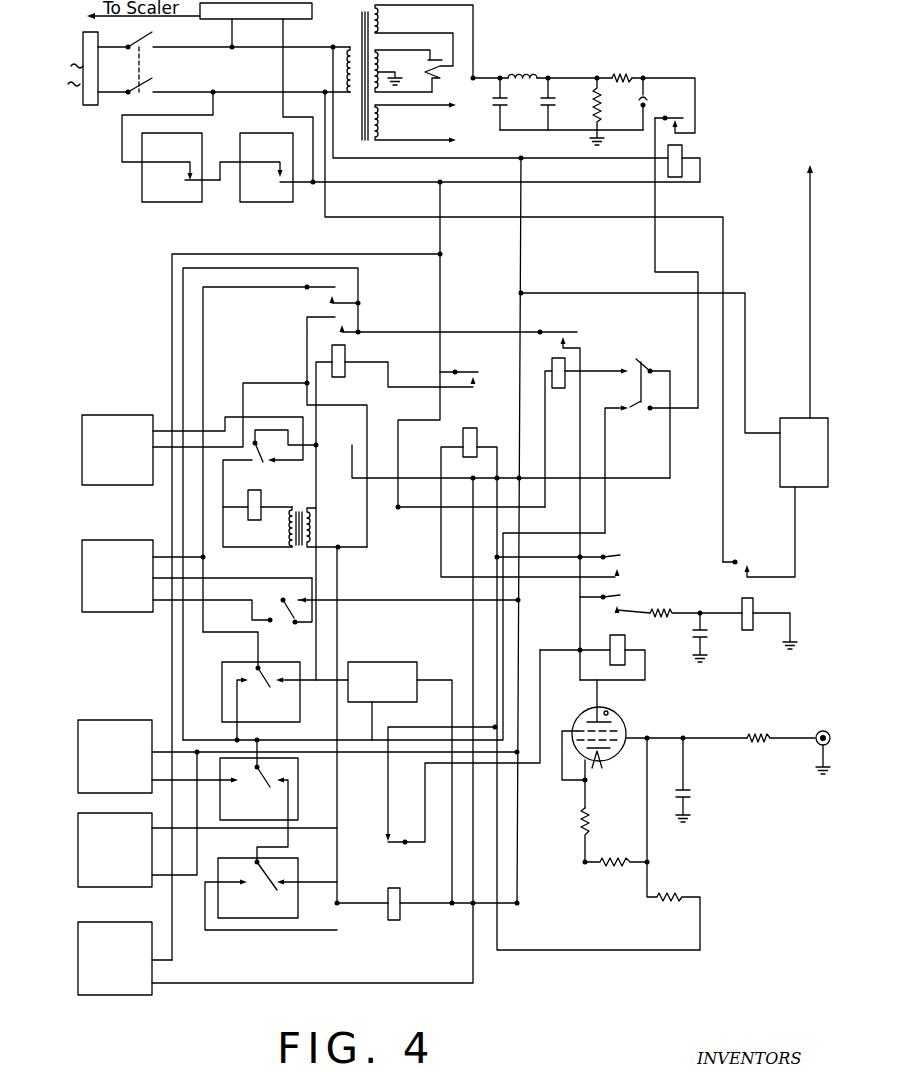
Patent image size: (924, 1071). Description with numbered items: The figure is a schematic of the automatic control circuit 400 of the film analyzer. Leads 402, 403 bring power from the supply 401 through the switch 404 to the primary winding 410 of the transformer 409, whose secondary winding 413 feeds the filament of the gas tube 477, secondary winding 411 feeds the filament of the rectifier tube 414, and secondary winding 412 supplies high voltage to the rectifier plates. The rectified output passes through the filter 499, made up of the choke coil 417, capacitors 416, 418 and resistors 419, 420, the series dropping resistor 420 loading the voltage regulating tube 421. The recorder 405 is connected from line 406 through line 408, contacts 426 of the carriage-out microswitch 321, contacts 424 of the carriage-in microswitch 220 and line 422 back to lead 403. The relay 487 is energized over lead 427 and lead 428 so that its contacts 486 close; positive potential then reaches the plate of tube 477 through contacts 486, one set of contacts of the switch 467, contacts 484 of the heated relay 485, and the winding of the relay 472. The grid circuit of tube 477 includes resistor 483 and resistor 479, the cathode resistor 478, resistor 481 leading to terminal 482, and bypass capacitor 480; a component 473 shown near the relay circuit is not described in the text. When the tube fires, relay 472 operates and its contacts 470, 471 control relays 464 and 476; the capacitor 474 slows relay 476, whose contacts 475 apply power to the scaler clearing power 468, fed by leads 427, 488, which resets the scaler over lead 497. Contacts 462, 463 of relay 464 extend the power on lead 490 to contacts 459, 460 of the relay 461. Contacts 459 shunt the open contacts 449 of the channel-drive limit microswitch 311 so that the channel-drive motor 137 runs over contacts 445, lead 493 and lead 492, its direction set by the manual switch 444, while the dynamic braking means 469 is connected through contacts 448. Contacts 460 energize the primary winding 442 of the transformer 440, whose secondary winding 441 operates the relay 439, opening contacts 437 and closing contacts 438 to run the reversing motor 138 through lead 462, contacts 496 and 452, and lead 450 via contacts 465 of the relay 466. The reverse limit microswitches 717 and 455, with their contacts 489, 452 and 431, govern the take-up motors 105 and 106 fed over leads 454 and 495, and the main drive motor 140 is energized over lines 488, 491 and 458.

The automatic control circuit 400 is at (706, 60).
The source of power supply 401 is at (91, 103).
The lead 402 is at (106, 46).
The lead 403 is at (110, 94).
The switch 404 is at (143, 85).
The recorder 405 is at (243, 19).
The line 406 is at (230, 34).
The line 408 is at (283, 62).
The transformer 409 is at (356, 22).
The primary winding 410 is at (347, 63).
The secondary winding 411 is at (380, 14).
The secondary winding 412 is at (380, 58).
The secondary winding 413 is at (380, 125).
The rectifier tube 414 is at (446, 56).
The capacitor 416 is at (517, 105).
The choke coil 417 is at (530, 76).
The capacitor 418 is at (564, 105).
The resistor 419 is at (612, 111).
The series dropping resistor 420 is at (620, 77).
The voltage regulating tube 421 is at (655, 103).
The line 422 is at (127, 119).
The contacts 424 is at (182, 181).
The contacts 426 is at (280, 178).
The lead 427 is at (423, 160).
The line 428 is at (418, 184).
The contacts 431 is at (248, 790).
The contacts 437 is at (264, 463).
The contacts 438 is at (252, 466).
The relay 439 is at (261, 498).
The transformer 440 is at (300, 553).
The secondary winding 441 is at (277, 527).
The primary winding 442 is at (311, 530).
The switch 444 is at (305, 597).
The contacts 445 is at (300, 624).
The contacts 448 is at (272, 677).
The contacts 449 is at (257, 667).
The lead 450 is at (180, 673).
The contacts 452 is at (268, 772).
The line 454 is at (163, 878).
The reverse limit microswitch 455 is at (298, 802).
The line 458 is at (283, 256).
The contacts 459 is at (348, 293).
The contacts 460 is at (350, 325).
The relay 461 is at (346, 356).
The lead 462 is at (291, 382).
The contacts 463 is at (490, 393).
The relay 464 is at (463, 440).
The contacts 465 is at (571, 341).
The relay 466 is at (567, 380).
The switch 467 is at (636, 360).
The scaler clearing power 468 is at (793, 480).
The dynamic braking means 469 is at (372, 668).
The contacts 470 is at (625, 562).
The contacts 471 is at (625, 602).
The relay 472 is at (624, 648).
The resistor 473 is at (672, 608).
The capacitor 474 is at (708, 636).
The contacts 475 is at (751, 562).
The relay 476 is at (752, 610).
The gas tube 477 is at (627, 723).
The resistor 478 is at (591, 826).
The resistor 479 is at (627, 860).
The capacitor 480 is at (697, 792).
The resistor 481 is at (760, 750).
The terminal 482 is at (821, 732).
The resistor 483 is at (675, 893).
The contacts 484 is at (397, 847).
The relay 485 is at (393, 921).
The contacts 486 is at (684, 121).
The relay 487 is at (675, 178).
The lead 488 is at (523, 258).
The contacts 489 is at (268, 893).
The lead 490 is at (442, 292).
The line 491 is at (328, 983).
The lead 492 is at (162, 548).
The lead 493 is at (160, 600).
The lead 495 is at (162, 740).
The contacts 496 is at (255, 866).
The lead 497 is at (808, 246).
The filter 499 is at (563, 53).
The take-up motor 105 is at (84, 856).
The take-up motor 106 is at (84, 763).
The channel-drive motor 137 is at (104, 607).
The reversing motor 138 is at (108, 478).
The main drive motor 140 is at (120, 990).
The carriage in microswitch 220 is at (147, 167).
The channel-drive limit microswitch 311 is at (300, 712).
The carriage out microswitch 321 is at (252, 137).
The reverse limit microswitch 717 is at (300, 898).